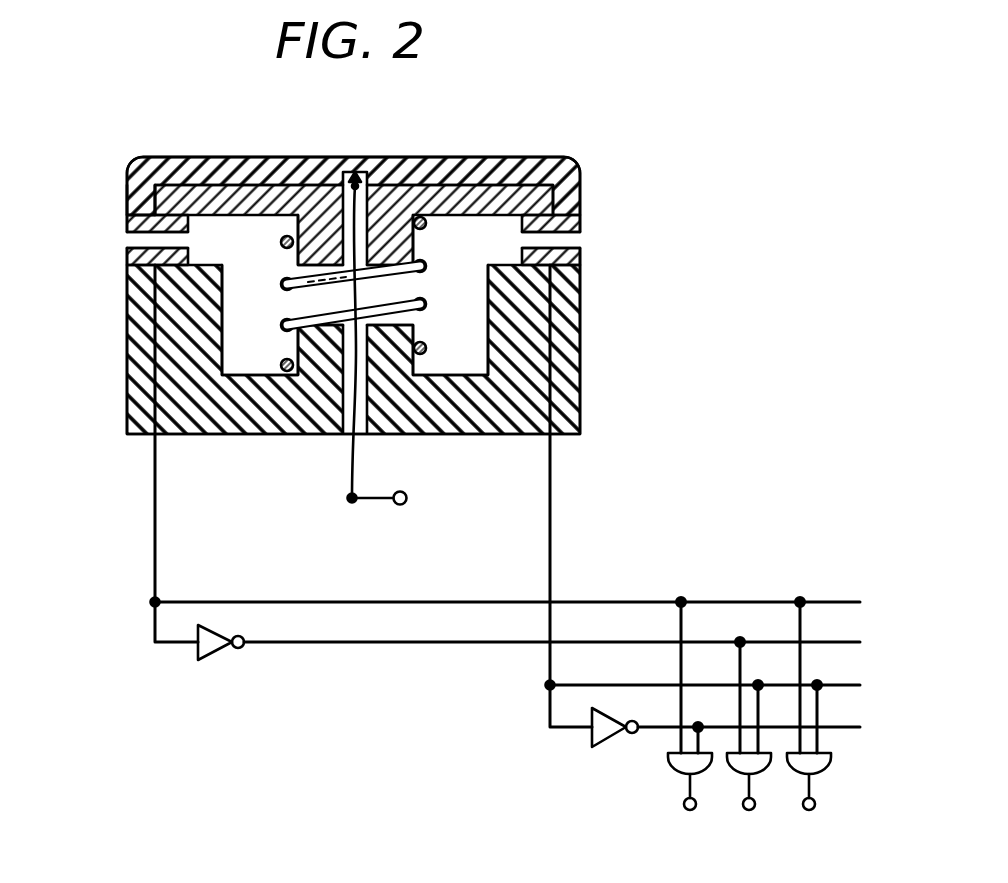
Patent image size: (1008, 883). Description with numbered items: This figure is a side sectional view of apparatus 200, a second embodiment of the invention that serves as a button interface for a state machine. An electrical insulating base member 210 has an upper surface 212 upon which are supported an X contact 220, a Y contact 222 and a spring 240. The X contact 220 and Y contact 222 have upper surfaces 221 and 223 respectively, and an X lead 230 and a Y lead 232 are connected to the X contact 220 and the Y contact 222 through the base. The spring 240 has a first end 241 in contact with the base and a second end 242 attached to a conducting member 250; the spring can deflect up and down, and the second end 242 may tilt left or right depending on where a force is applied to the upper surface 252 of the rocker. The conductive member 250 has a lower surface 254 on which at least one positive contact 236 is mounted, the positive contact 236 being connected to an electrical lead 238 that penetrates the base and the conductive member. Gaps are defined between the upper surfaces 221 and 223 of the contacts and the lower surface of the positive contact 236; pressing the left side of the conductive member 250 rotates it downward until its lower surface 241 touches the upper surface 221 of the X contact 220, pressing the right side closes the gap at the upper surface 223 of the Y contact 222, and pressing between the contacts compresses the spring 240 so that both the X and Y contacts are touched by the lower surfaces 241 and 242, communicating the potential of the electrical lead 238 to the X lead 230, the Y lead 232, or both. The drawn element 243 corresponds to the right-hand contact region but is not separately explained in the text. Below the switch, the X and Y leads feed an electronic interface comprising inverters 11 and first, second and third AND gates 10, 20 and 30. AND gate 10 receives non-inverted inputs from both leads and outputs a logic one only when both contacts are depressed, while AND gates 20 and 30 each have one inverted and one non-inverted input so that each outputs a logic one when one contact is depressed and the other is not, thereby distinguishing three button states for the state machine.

The apparatus 200 is at (677, 149).
The electrical insulating base member 210 is at (570, 353).
The upper surface 212 is at (218, 257).
The X contact 220 is at (127, 258).
The upper surface 221 is at (130, 241).
The Y contact 222 is at (583, 258).
The upper surface 223 is at (572, 243).
The X lead 230 is at (160, 517).
The Y lead 232 is at (553, 517).
The positive contact 236 is at (128, 213).
The electrical lead 238 is at (365, 513).
The spring 240 is at (425, 312).
The first end 241 is at (186, 233).
The second end 242 is at (410, 185).
The right contact pad and rivets 243 is at (530, 236).
The conducting member 250 is at (470, 180).
The upper surface 252 is at (210, 156).
The lower surface 254 is at (485, 182).
The inverters 11 is at (207, 650).
The first AND gate 10 is at (822, 777).
The second AND gate 20 is at (762, 777).
The third AND gate 30 is at (700, 778).